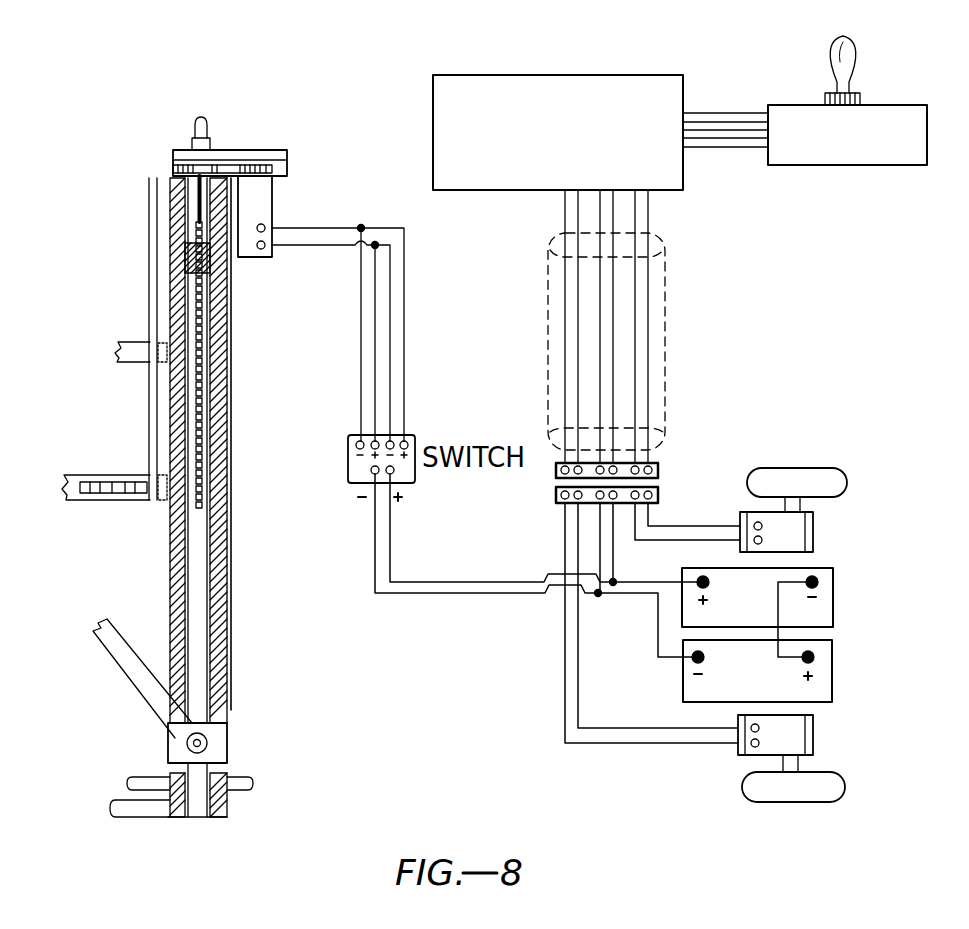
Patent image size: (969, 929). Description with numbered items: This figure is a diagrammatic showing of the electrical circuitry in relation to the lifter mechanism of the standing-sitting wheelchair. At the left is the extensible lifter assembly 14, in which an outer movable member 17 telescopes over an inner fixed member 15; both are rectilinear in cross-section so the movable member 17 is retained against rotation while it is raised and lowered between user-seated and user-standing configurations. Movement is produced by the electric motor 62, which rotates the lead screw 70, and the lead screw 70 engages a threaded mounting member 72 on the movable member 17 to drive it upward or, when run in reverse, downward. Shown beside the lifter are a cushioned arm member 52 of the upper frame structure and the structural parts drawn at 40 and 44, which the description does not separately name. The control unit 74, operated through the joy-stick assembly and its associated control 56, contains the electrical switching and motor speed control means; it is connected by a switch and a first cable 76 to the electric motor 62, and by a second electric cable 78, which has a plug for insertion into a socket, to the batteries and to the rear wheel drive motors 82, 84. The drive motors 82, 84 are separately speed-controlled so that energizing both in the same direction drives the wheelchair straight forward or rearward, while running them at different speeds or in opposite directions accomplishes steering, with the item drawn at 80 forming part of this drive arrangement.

The extensible lifter assembly 14 is at (230, 430).
The inner fixed member 15 is at (200, 568).
The outer movable member 17 is at (227, 353).
The lower support bracket 40 is at (108, 482).
The pivot arm 44 is at (137, 666).
The cushioned arm member 52 is at (127, 343).
The joystick 56 is at (877, 104).
The electric motor 62 is at (262, 199).
The lead screw 70 is at (198, 510).
The threaded mounting member 72 is at (184, 249).
The control unit 74 is at (624, 75).
The first cable 76 is at (393, 229).
The second electric cable 78 is at (665, 330).
The left drive motor 80 is at (797, 538).
The rear wheel drive motor 82 is at (795, 737).
The rear wheel drive motor 84 is at (806, 483).